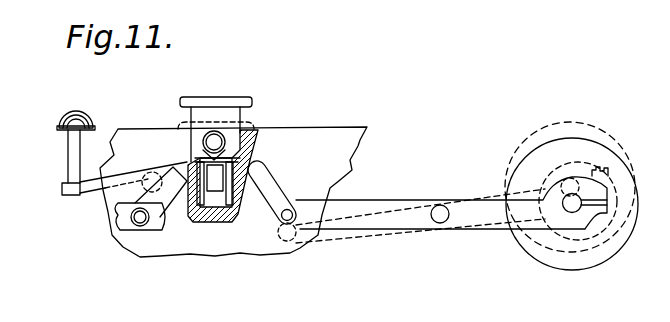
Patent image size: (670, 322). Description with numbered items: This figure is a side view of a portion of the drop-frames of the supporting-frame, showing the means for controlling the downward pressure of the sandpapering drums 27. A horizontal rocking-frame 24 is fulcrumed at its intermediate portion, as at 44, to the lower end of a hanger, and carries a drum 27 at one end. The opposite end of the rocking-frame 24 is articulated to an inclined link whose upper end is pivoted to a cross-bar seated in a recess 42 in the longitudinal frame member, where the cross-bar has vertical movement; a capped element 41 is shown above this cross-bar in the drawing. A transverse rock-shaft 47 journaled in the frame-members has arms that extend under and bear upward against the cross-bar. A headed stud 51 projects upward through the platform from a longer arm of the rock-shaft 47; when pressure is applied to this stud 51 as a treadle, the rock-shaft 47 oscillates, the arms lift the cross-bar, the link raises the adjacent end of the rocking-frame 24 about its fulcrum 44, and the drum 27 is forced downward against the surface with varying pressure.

The headed stud 51 is at (60, 118).
The transverse rock-shaft 47 is at (152, 170).
The plunger cap 41 is at (252, 106).
The recesses 42 is at (230, 164).
The horizontal rocking-frame 24 is at (463, 213).
The fulcrum 44 is at (438, 226).
The sandpapering drum 27 is at (602, 256).